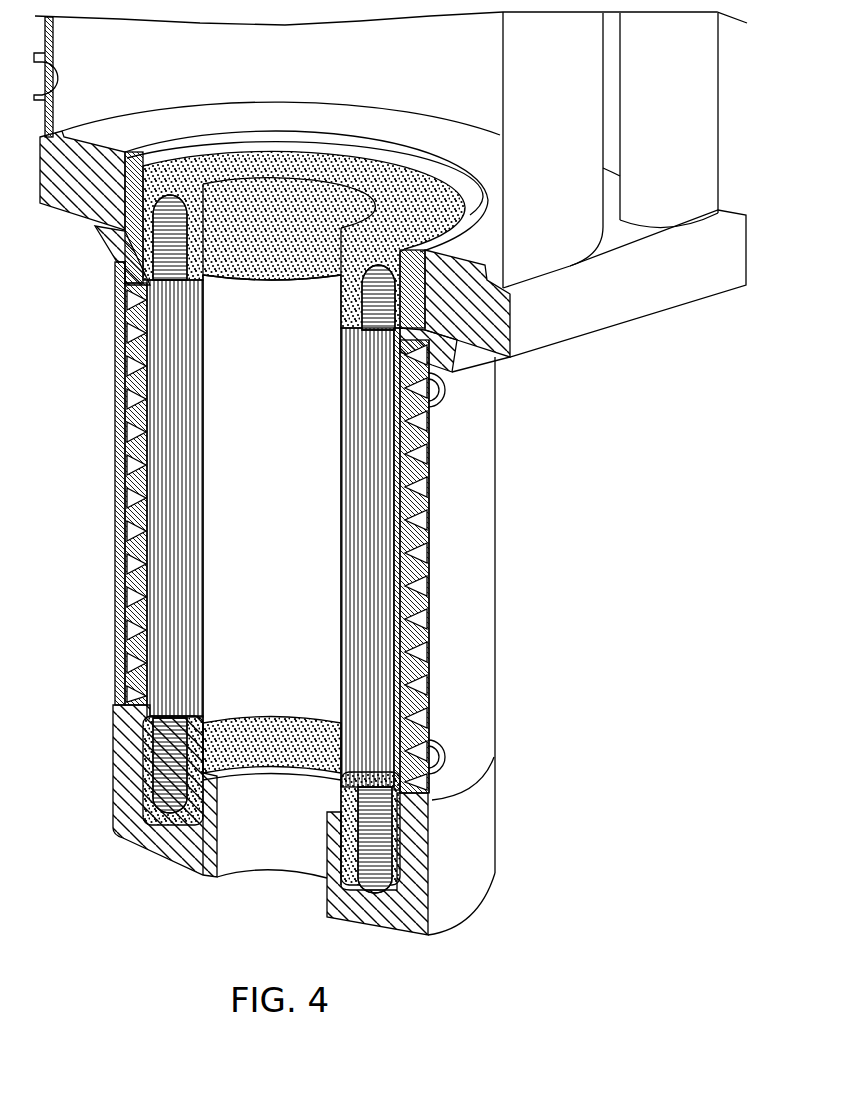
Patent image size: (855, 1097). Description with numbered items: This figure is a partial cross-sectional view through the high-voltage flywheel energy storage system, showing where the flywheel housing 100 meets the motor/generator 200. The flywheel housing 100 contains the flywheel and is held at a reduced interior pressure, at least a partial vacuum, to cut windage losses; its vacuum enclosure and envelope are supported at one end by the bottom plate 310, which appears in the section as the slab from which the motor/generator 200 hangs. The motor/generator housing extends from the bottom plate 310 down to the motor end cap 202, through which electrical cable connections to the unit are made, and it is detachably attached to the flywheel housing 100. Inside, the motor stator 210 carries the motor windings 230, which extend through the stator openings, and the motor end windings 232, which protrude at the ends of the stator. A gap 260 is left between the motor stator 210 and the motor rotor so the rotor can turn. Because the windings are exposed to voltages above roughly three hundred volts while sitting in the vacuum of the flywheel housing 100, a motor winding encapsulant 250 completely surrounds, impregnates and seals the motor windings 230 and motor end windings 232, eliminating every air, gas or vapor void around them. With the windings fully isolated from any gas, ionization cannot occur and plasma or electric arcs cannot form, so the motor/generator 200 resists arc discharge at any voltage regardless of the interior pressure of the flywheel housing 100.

The flywheel housing 100 is at (587, 136).
The bottom plate 310 is at (662, 285).
The motor/generator 200 is at (432, 800).
The motor end cap 202 is at (492, 872).
The motor stator 210 is at (428, 505).
The motor windings 230 is at (428, 617).
The motor end windings 232 is at (445, 382).
The motor winding encapsulant 250 is at (97, 224).
The gap 260 is at (200, 697).